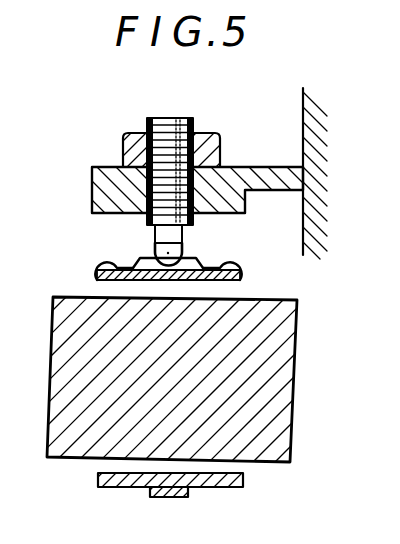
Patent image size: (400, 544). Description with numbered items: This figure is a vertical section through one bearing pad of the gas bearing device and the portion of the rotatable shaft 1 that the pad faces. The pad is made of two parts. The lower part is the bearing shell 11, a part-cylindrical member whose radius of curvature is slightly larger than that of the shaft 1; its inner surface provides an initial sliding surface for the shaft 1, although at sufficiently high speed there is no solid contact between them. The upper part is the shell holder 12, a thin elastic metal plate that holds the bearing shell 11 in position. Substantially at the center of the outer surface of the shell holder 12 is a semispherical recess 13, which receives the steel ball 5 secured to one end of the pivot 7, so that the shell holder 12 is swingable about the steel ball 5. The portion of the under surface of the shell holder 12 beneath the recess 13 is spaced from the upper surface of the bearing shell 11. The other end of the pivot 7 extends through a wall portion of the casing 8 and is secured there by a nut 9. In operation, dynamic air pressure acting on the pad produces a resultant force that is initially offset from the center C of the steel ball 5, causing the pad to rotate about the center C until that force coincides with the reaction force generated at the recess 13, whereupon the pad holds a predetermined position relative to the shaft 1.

The rotatable shaft 1 is at (260, 447).
The steel ball 5 is at (181, 242).
The pivot 7 is at (177, 122).
The casing 8 is at (96, 179).
The nut 9 is at (127, 133).
The bearing shell 11 is at (237, 281).
The shell holder 12 is at (203, 263).
The semispherical recess 13 is at (143, 263).
The center of the steel ball C is at (168, 253).